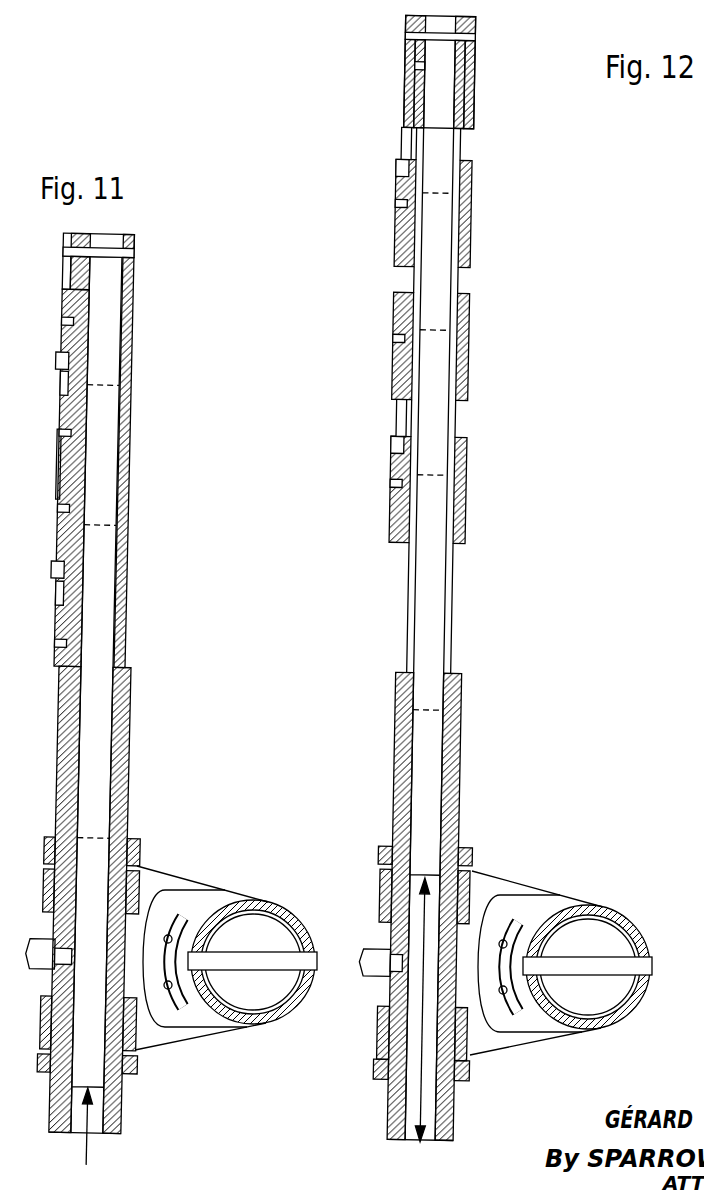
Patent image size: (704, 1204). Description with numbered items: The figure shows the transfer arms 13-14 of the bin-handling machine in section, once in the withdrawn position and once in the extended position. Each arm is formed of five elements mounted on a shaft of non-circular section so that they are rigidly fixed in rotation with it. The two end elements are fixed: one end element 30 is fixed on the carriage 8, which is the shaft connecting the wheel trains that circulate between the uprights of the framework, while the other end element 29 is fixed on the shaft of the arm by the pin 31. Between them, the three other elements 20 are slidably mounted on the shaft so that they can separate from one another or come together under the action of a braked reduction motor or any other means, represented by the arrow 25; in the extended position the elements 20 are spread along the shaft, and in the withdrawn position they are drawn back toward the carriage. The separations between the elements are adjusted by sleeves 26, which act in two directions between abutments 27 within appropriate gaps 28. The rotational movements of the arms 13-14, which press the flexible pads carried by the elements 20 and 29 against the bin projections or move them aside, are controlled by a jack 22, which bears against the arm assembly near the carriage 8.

In FIG. 11, the carriage 8 is at (267, 1010).
In FIG. 12, the carriage 8 is at (625, 1022).
In FIG. 11, the transfer arms 13-14 is at (98, 708).
In FIG. 12, the transfer arms 13-14 is at (430, 603).
In FIG. 11, the slidable elements 20 is at (130, 483).
In FIG. 12, the slidable elements 20 is at (543, 490).
In FIG. 11, the jack 22 is at (43, 957).
In FIG. 12, the jack 22 is at (373, 962).
In FIG. 11, the arrow 25 is at (87, 1150).
In FIG. 12, the arrow 25 is at (420, 1087).
In FIG. 11, the sleeves 26 is at (207, 518).
In FIG. 12, the sleeves 26 is at (538, 655).
In FIG. 11, the abutments 27 is at (207, 567).
In FIG. 12, the abutments 27 is at (388, 447).
In FIG. 11, the gaps 28 is at (207, 617).
In FIG. 12, the gaps 28 is at (393, 425).
In FIG. 11, the fixed end element 29 is at (133, 267).
In FIG. 12, the fixed end element 29 is at (472, 77).
In FIG. 11, the fixed end element 30 is at (120, 772).
In FIG. 12, the fixed end element 30 is at (445, 780).
In FIG. 11, the pin 31 is at (133, 255).
In FIG. 12, the pin 31 is at (472, 37).